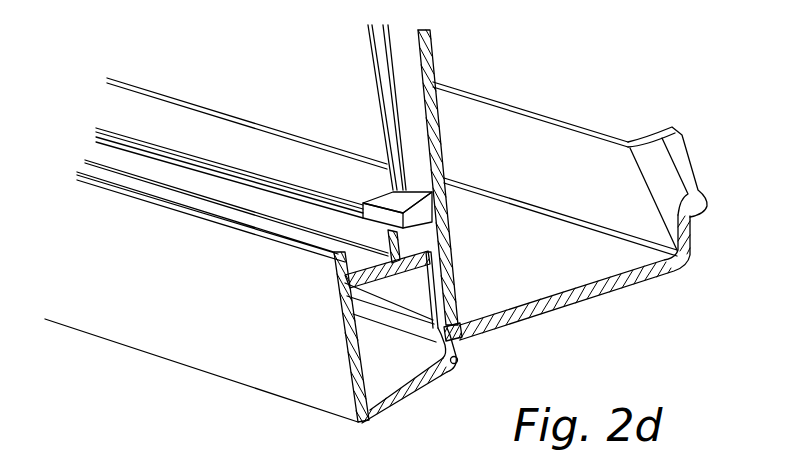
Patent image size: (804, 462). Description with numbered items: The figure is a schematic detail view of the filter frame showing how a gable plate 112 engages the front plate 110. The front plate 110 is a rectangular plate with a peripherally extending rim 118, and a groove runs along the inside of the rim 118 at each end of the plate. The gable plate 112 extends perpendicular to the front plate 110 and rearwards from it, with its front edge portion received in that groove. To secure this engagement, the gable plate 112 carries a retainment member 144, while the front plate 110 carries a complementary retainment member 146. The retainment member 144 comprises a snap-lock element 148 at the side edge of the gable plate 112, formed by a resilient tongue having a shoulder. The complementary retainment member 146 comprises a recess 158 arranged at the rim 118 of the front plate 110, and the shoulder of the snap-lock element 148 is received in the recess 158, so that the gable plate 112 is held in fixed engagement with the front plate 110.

The front plate 110 is at (606, 292).
The gable plate 112 is at (432, 50).
The rim 118 is at (266, 372).
The retainment member 144 is at (458, 283).
The complementary retainment member 146 is at (440, 362).
The snap-lock element 148 is at (503, 336).
The recess 158 is at (462, 343).